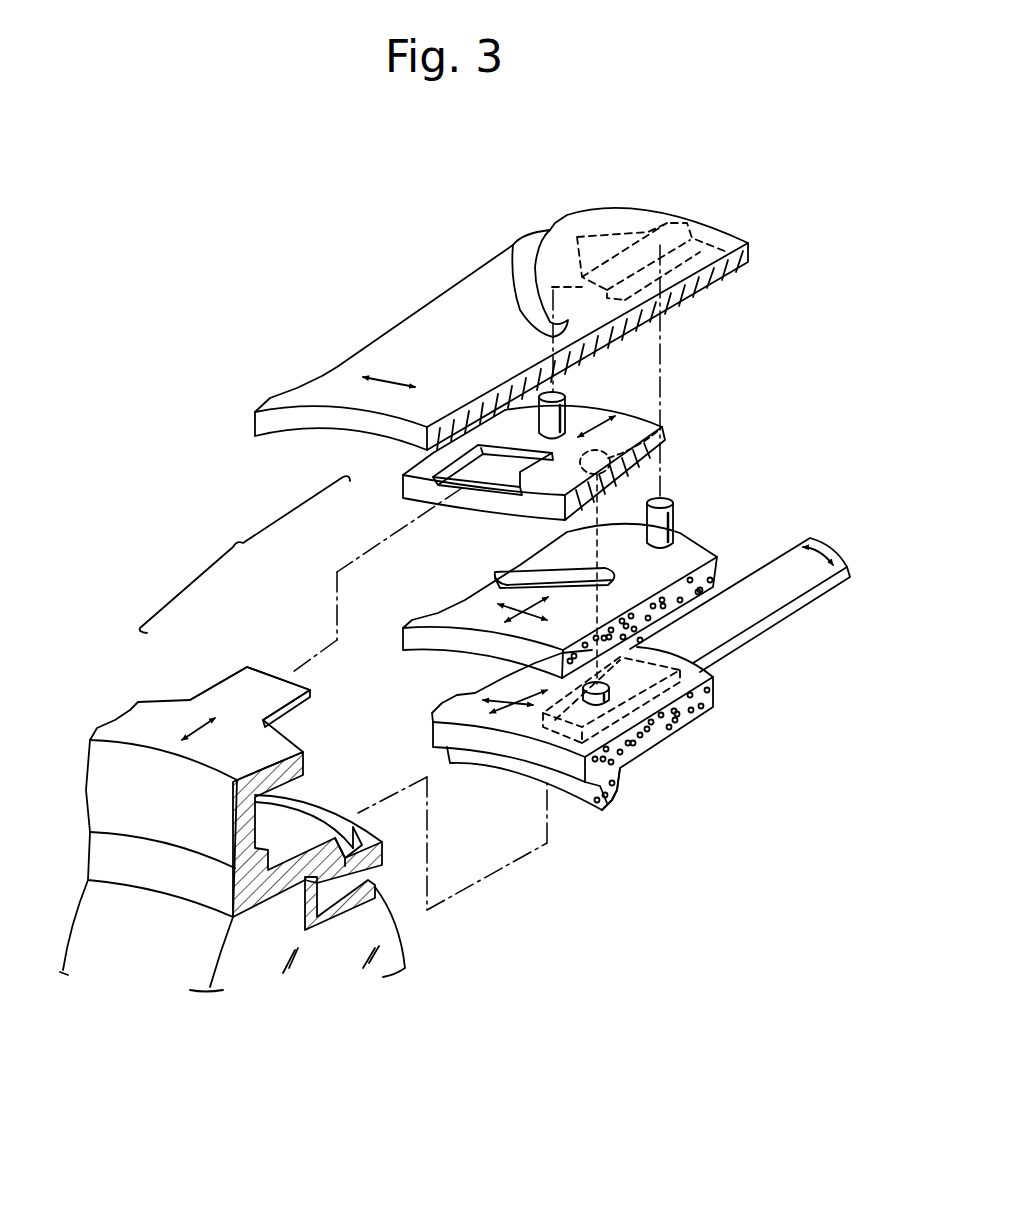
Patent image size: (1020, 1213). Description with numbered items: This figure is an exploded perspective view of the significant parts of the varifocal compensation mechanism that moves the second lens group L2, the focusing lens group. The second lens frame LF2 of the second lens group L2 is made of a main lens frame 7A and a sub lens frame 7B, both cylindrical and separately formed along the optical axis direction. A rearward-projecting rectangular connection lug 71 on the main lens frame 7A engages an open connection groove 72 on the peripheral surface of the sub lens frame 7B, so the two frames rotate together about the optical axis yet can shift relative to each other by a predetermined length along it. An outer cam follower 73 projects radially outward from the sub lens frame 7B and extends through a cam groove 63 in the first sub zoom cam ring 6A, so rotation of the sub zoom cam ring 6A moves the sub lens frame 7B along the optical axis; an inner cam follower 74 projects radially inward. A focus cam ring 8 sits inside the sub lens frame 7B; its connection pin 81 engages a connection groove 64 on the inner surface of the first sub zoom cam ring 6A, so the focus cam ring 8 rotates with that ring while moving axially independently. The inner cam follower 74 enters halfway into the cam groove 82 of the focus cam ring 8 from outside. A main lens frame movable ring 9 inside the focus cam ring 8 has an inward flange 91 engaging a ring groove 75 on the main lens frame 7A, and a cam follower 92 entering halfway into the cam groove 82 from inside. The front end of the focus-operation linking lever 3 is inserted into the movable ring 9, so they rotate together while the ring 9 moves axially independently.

The focus-operation linking lever 3 is at (740, 622).
The first sub zoom cam ring 6A is at (408, 330).
The cam groove 63 is at (532, 238).
The connection groove 64 is at (677, 210).
The main lens frame 7A is at (170, 700).
The sub lens frame 7B is at (404, 485).
The connection lug 71 is at (272, 683).
The open connection groove 72 is at (508, 481).
The outer cam follower 73 is at (557, 412).
The inner cam follower 74 is at (640, 440).
The ring groove 75 is at (357, 850).
The focus cam ring 8 is at (712, 555).
The connection pin 81 is at (663, 520).
The cam groove 82 is at (512, 580).
The main lens frame movable ring 9 is at (690, 720).
The inward flange 91 is at (607, 806).
The cam follower 92 is at (602, 705).
The second lens frame LF2 is at (245, 554).
The second lens group L2 is at (235, 968).